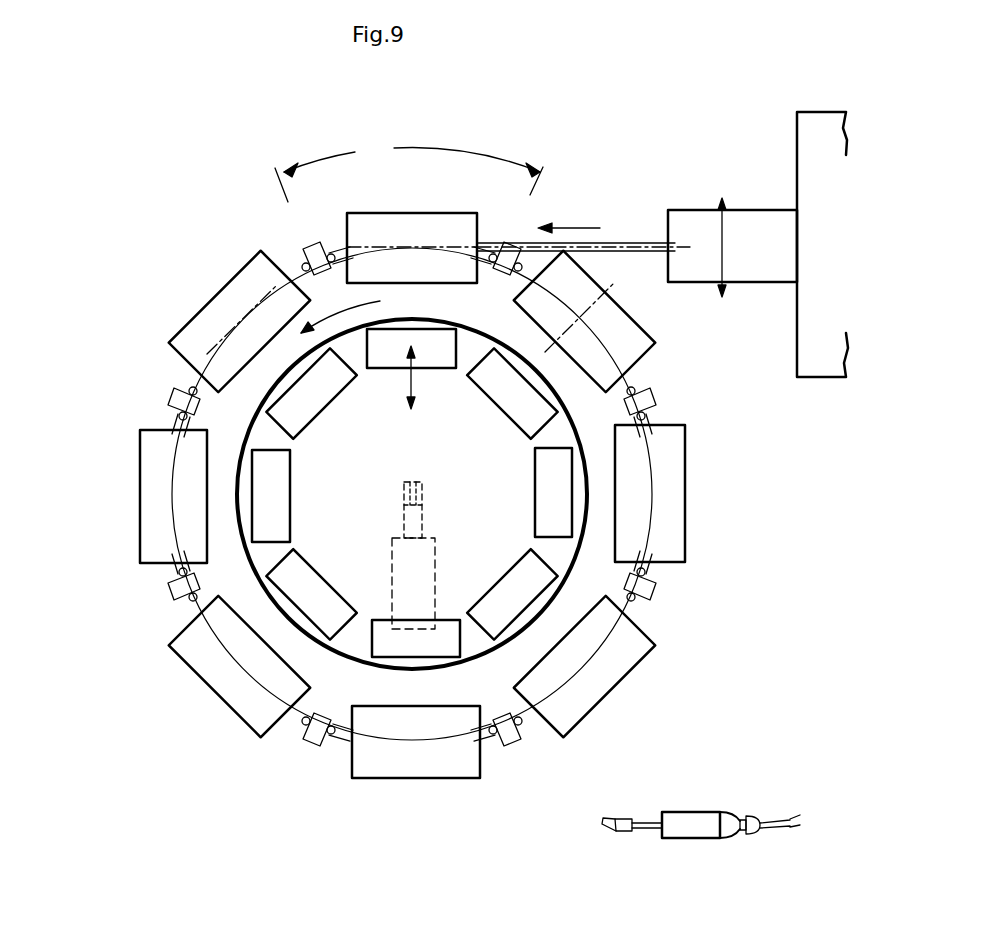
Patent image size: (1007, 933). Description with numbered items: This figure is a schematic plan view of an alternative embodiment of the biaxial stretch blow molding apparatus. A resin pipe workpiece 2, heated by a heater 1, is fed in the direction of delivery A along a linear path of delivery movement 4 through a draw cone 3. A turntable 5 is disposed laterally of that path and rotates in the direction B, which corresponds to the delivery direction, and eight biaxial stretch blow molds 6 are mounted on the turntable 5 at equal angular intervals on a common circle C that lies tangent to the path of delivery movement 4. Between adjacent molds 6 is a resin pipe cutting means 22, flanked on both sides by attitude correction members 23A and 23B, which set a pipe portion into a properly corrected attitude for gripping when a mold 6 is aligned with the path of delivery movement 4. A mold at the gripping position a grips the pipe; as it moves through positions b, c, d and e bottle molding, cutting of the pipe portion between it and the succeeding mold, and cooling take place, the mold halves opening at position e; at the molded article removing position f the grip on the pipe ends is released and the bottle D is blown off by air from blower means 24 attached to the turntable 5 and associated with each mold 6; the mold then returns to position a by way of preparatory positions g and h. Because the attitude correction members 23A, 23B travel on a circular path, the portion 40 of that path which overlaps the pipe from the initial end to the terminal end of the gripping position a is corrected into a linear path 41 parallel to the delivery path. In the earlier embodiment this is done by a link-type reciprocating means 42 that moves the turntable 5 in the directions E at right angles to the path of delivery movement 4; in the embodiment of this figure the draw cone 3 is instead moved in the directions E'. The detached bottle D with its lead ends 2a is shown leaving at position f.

The heater 1 is at (815, 344).
The resin pipe workpiece 2 is at (633, 243).
The lead wire 2a is at (614, 832).
The draw cone 3 is at (748, 212).
The path of delivery movement 4 is at (660, 252).
The turntable 5 is at (245, 602).
The biaxial stretch blow mold 6 is at (440, 213).
The resin pipe cutting means 22 is at (175, 392).
The attitude correction member 23A is at (304, 255).
The attitude correction member 23B is at (332, 257).
The blower means 24 is at (512, 420).
The portion of the path of rotation 40 is at (409, 171).
The linear path 41 is at (418, 262).
The reciprocating means 42 is at (390, 550).
The direction of delivery A is at (590, 228).
The direction of rotation B is at (350, 320).
The common circle C is at (178, 523).
The bottle D is at (722, 812).
The reciprocating directions E is at (428, 377).
The draw cone moving directions E' is at (741, 247).
The gripping position a is at (410, 194).
The molding start position b is at (199, 288).
The intermediate position c is at (118, 495).
The intermediate position d is at (208, 711).
The mold opening position e is at (415, 797).
The molded article removing position f is at (665, 775).
The preparatory position g is at (710, 494).
The preparatory position h is at (609, 274).